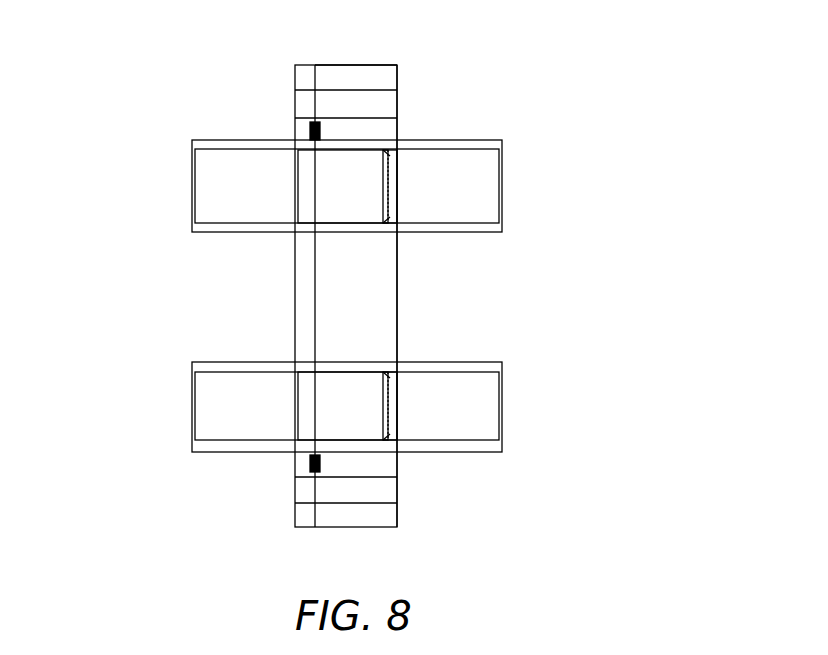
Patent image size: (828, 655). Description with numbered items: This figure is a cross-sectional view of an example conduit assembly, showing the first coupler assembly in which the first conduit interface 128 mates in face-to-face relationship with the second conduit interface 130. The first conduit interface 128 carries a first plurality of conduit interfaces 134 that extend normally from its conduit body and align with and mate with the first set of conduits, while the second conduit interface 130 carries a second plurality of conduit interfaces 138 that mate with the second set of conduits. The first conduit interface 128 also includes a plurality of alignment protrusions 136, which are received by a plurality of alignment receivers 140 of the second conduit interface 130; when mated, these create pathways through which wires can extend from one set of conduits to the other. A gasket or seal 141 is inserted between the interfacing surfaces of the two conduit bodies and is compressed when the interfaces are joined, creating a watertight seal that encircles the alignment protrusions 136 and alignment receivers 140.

The first conduit interface 128 is at (302, 78).
The second conduit interface 130 is at (384, 77).
The first plurality of conduit interfaces 134 is at (163, 129).
The plurality of alignment protrusions 136 is at (313, 168).
The second plurality of conduit interfaces 138 is at (519, 127).
The plurality of alignment receivers 140 is at (384, 149).
The gasket or seal 141 is at (311, 468).